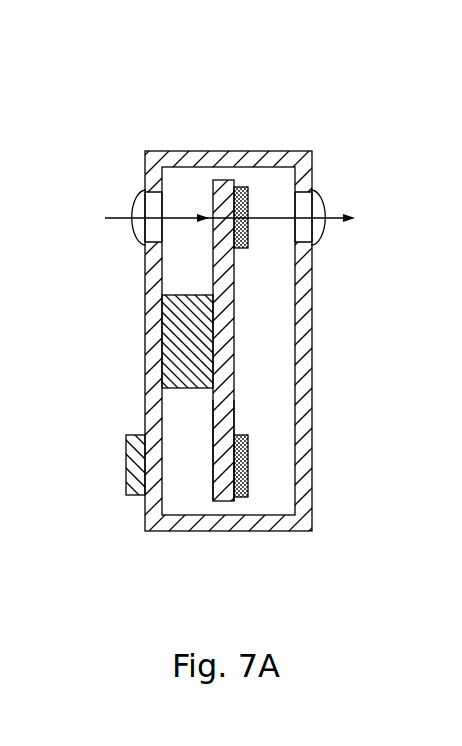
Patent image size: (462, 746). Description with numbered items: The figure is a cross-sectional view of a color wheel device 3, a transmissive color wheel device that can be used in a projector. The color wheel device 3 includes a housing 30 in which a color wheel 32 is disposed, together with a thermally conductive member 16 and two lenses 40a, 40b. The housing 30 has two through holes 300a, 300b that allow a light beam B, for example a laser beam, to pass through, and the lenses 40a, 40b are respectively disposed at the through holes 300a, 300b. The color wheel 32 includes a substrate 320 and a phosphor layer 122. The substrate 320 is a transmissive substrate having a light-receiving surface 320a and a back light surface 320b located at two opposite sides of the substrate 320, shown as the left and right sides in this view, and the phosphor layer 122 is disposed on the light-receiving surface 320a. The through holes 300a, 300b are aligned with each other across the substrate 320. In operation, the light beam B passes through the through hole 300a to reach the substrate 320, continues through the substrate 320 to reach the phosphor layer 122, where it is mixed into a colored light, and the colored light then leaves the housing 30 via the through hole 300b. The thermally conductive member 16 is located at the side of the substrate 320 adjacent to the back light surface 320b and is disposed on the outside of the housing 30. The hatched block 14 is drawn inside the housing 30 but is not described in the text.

The color wheel device 3 is at (122, 70).
The housing 30 is at (186, 158).
The through hole 300a is at (147, 249).
The through hole 300b is at (311, 250).
The lens 40a is at (138, 191).
The lens 40b is at (319, 195).
The light beam B is at (116, 218).
The light emitting element 14 is at (165, 337).
The thermally conductive member 16 is at (138, 468).
The color wheel 32 is at (231, 320).
The substrate 320 is at (234, 406).
The phosphor layer 122 is at (248, 447).
The light-receiving surface 320a is at (236, 499).
The back light surface 320b is at (214, 484).